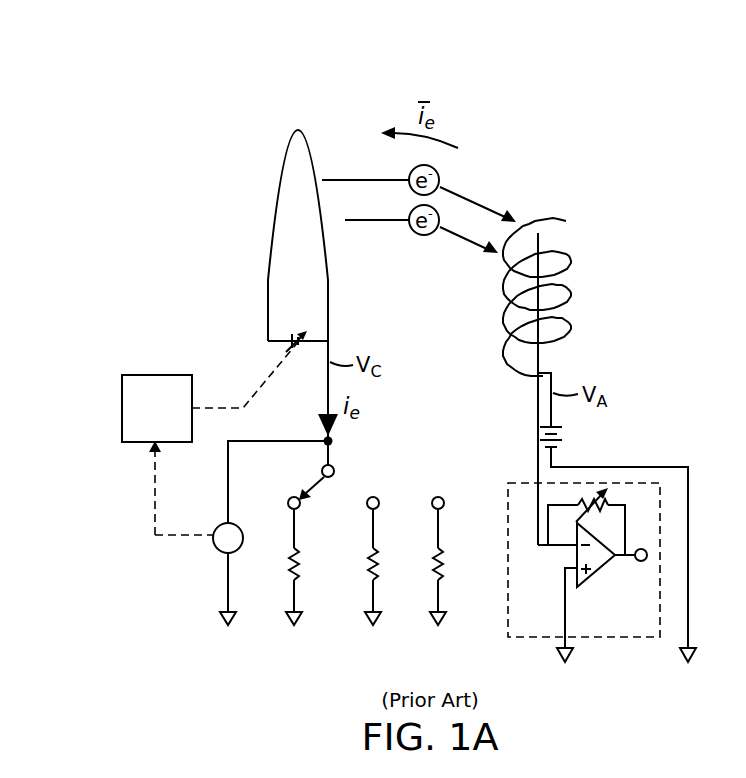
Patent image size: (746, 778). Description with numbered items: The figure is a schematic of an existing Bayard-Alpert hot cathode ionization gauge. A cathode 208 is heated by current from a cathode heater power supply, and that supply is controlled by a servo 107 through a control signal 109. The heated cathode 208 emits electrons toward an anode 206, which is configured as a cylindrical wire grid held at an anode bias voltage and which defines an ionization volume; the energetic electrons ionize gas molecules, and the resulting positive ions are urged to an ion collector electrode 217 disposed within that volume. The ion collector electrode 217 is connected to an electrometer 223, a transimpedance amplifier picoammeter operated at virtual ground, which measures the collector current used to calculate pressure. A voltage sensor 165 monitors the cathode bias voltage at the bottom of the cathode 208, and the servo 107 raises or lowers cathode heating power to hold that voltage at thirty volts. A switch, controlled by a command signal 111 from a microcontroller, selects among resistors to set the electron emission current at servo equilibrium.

The cathode 208 is at (291, 132).
The control signal 109 is at (278, 368).
The anode 206 is at (572, 260).
The ion collector electrode 217 is at (541, 313).
The electrometer 223 is at (507, 595).
The servo 107 is at (157, 455).
The voltage sensor 165 is at (213, 547).
The command signal 111 is at (312, 487).